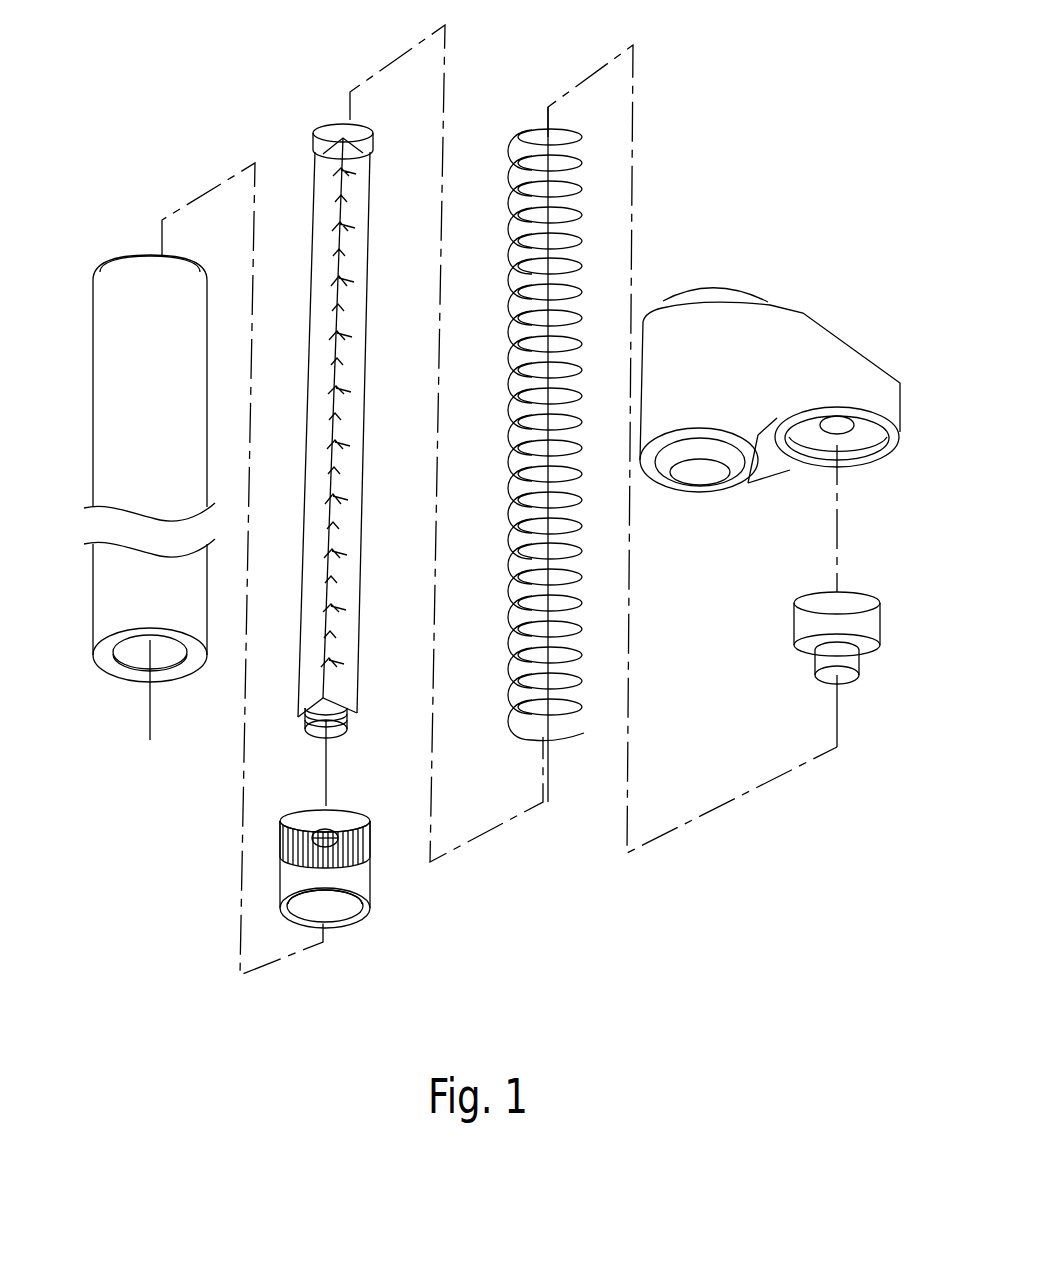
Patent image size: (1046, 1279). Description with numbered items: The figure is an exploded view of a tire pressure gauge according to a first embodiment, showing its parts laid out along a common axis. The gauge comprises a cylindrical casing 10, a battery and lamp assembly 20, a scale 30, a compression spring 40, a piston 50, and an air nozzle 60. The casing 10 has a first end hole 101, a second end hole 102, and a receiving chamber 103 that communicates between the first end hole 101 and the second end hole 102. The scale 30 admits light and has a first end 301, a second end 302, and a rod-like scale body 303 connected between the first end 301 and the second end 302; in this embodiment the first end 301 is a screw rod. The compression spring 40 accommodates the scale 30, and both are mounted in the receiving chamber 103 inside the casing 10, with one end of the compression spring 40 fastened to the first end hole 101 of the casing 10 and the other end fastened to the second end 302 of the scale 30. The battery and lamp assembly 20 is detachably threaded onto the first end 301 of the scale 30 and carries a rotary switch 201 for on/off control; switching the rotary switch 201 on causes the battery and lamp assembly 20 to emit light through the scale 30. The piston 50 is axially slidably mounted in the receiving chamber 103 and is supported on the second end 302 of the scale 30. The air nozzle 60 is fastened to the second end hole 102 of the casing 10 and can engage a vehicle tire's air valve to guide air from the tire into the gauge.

The cylindrical casing 10 is at (93, 428).
The first end hole 101 is at (95, 665).
The second end hole 102 is at (132, 254).
The receiving chamber 103 is at (167, 657).
The battery and lamp assembly 20 is at (353, 927).
The rotary switch 201 is at (373, 860).
The scale 30 is at (368, 342).
The first end 301 is at (337, 727).
The second end 302 is at (318, 136).
The rod-like scale body 303 is at (365, 440).
The compression spring 40 is at (532, 130).
The piston 50 is at (845, 597).
The air nozzle 60 is at (713, 276).